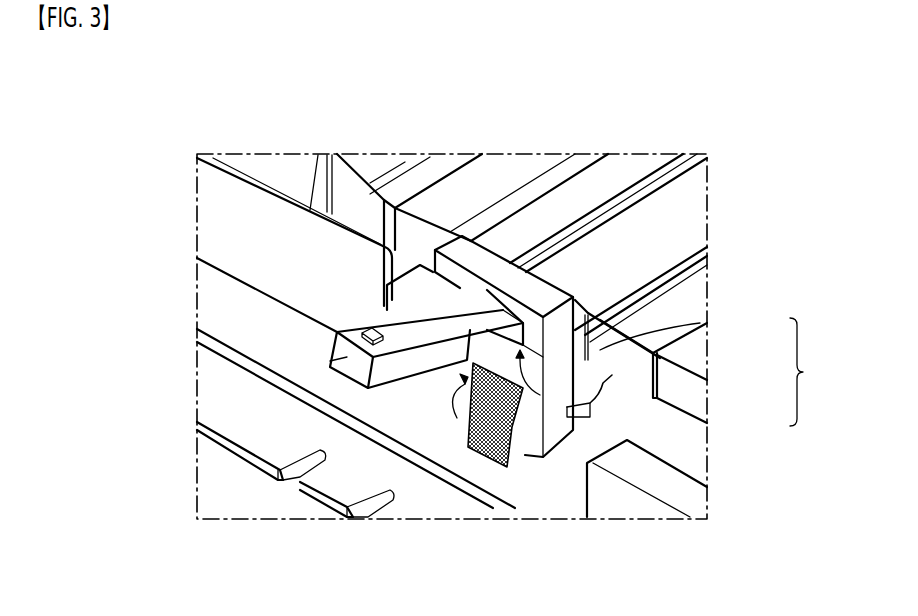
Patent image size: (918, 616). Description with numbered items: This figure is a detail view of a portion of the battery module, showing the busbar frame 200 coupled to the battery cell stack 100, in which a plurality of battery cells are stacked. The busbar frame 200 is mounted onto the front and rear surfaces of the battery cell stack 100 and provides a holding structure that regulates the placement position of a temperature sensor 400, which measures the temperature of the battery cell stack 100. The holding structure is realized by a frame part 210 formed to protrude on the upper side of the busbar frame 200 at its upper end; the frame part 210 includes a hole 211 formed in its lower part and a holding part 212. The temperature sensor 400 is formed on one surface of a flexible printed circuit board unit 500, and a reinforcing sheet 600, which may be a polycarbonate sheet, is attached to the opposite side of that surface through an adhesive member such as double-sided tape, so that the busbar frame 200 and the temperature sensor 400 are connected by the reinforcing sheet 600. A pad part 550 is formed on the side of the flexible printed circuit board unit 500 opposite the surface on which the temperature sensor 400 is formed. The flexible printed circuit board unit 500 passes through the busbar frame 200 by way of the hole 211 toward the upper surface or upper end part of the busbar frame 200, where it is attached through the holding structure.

The battery cell stack 100 is at (647, 232).
The busbar frame 200 is at (227, 307).
The frame part 210 is at (815, 372).
The hole 211 is at (590, 405).
The holding part 212 is at (700, 323).
The temperature sensor 400 is at (370, 327).
The flexible printed circuit board unit 500 is at (407, 322).
The pad part 550 is at (347, 357).
The reinforcing sheet 600 is at (407, 357).